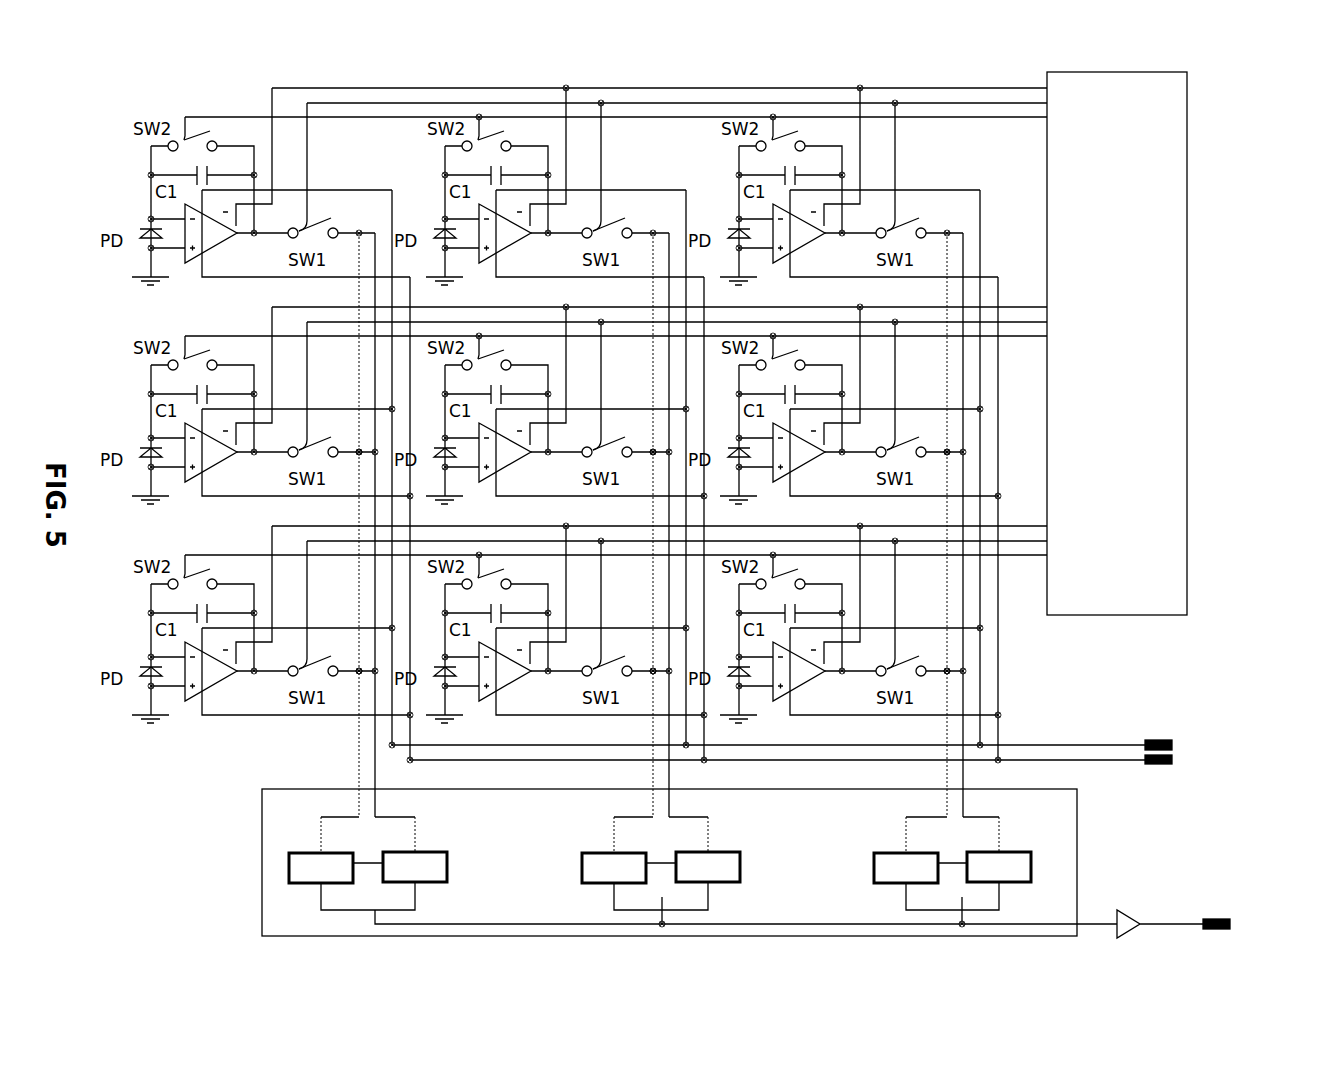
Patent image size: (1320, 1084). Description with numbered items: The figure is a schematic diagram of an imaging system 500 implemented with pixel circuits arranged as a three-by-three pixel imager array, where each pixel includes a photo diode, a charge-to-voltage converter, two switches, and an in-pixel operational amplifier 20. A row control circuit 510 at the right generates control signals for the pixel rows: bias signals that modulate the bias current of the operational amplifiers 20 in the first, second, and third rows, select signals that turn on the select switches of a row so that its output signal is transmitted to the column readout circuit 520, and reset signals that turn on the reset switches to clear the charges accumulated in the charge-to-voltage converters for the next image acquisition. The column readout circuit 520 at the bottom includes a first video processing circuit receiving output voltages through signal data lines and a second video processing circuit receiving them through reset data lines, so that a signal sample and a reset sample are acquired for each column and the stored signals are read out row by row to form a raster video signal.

The imaging system 500 is at (741, 81).
The row control circuit 510 is at (1195, 111).
The column readout circuit 520 is at (1088, 850).
The operational amplifier 20 is at (505, 452).